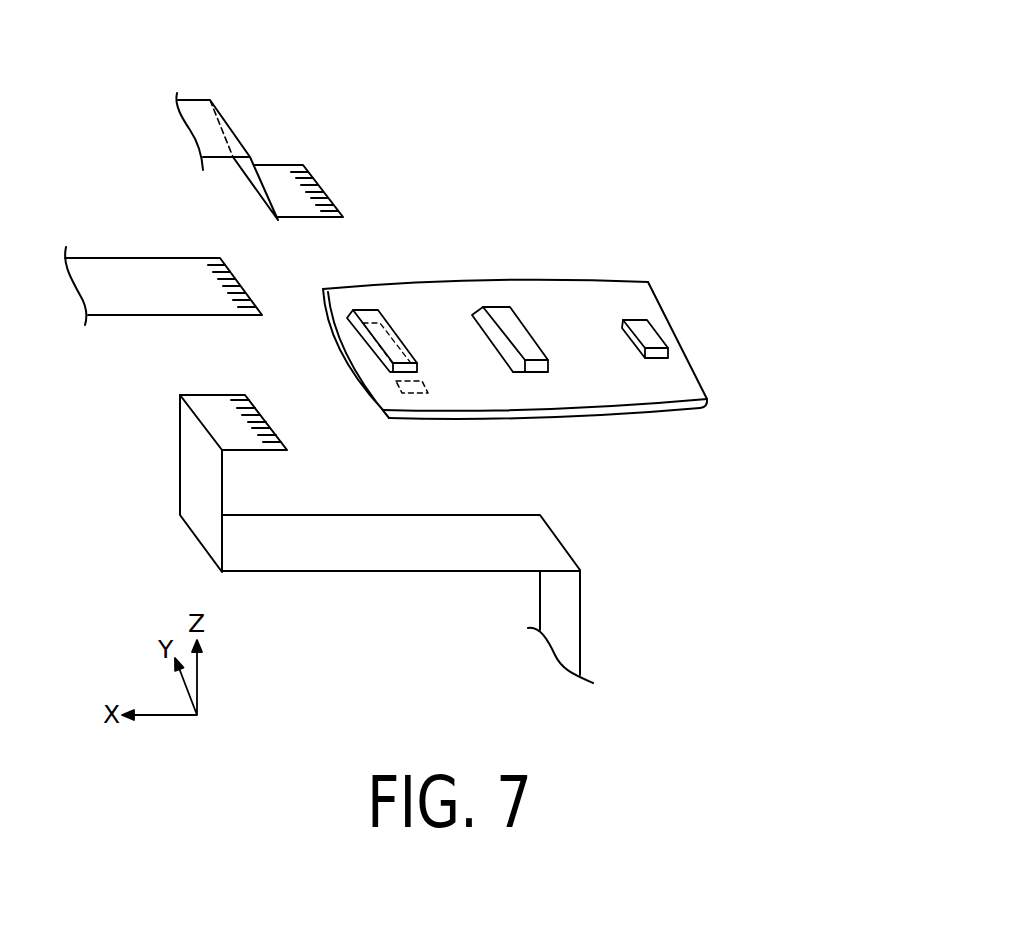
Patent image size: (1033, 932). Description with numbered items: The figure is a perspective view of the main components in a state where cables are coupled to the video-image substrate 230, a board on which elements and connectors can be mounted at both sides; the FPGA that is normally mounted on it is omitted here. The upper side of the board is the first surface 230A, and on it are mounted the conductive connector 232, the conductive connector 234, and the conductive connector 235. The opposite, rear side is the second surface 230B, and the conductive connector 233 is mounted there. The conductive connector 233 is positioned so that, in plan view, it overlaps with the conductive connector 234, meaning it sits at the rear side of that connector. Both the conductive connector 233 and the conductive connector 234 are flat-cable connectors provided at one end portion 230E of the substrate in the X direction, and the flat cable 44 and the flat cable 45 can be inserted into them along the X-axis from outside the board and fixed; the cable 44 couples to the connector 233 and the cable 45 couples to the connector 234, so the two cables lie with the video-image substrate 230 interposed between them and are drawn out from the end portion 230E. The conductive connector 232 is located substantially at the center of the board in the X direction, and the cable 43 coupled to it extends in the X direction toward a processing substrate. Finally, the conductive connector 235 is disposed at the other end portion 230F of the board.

The cable 43 is at (448, 322).
The cable 44 is at (582, 617).
The cable 45 is at (333, 315).
The video-image substrate 230 is at (515, 342).
The first surface 230A is at (628, 300).
The second surface 230B is at (463, 385).
The end portion 230E is at (321, 360).
The end portion 230F is at (718, 375).
The conductive connector 232 is at (542, 372).
The conductive connector 233 is at (282, 427).
The conductive connector 234 is at (363, 308).
The conductive connector 235 is at (655, 358).